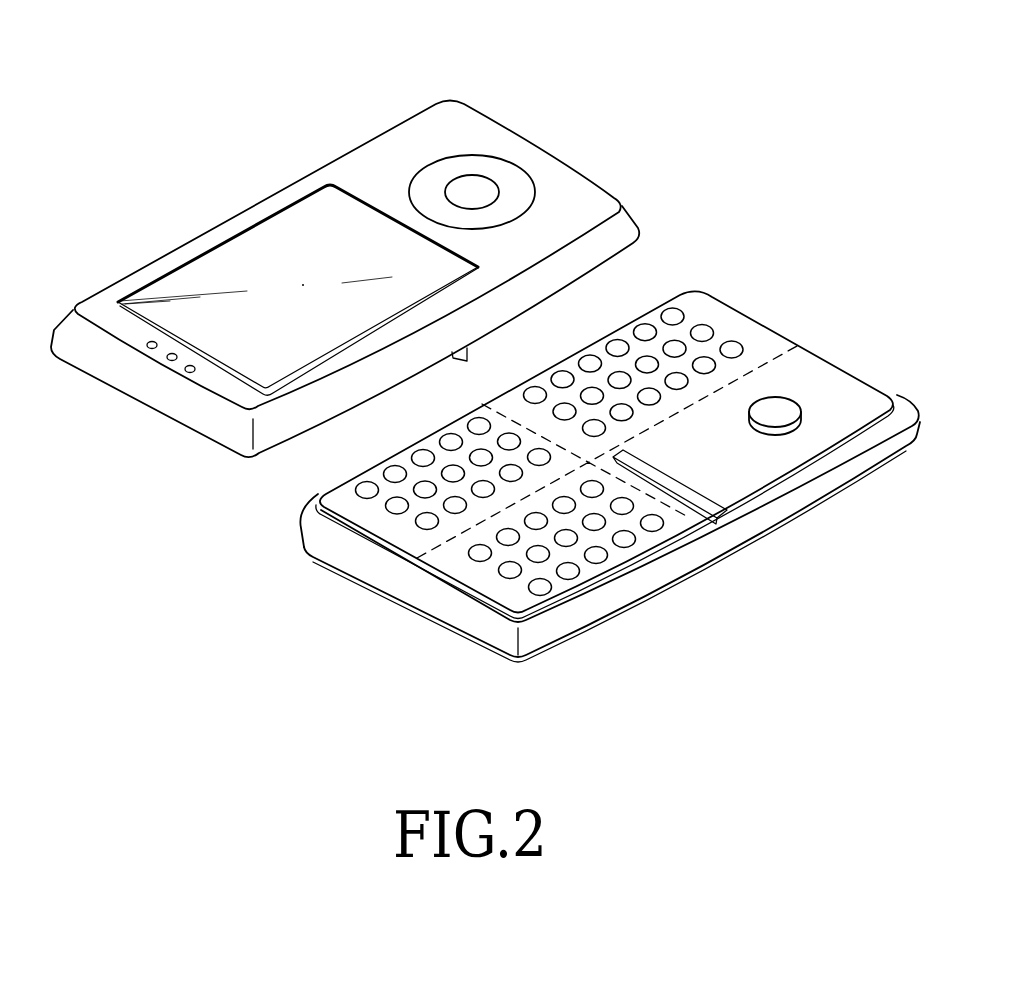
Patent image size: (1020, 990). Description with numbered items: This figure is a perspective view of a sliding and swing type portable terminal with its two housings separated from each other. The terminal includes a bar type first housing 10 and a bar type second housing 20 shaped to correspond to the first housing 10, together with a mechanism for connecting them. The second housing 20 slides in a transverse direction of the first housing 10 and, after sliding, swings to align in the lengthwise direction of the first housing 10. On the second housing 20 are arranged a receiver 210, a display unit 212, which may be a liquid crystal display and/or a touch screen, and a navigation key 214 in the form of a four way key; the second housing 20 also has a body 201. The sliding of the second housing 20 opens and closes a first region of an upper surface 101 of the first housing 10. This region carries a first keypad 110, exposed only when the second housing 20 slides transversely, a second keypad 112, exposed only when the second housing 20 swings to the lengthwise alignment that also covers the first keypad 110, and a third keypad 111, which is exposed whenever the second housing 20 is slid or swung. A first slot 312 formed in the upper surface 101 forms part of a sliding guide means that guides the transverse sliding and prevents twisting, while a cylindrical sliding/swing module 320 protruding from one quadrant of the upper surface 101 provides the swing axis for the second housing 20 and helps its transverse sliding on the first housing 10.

The second housing 20 is at (521, 123).
The housing body of second housing 201 is at (585, 186).
The display unit 212 is at (238, 258).
The navigation key 214 is at (448, 180).
The receiver 210 is at (172, 357).
The first housing 10 is at (766, 311).
The upper surface 101 is at (787, 452).
The first keypad 110 is at (705, 332).
The third keypad 111 is at (395, 507).
The second keypad 112 is at (600, 558).
The first slot 312 is at (727, 514).
The sliding/swing module 320 is at (784, 408).